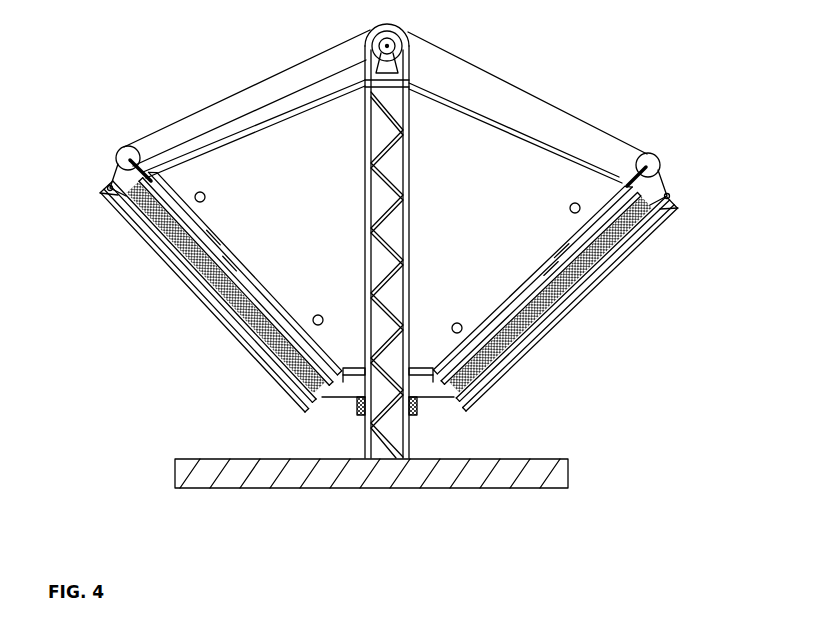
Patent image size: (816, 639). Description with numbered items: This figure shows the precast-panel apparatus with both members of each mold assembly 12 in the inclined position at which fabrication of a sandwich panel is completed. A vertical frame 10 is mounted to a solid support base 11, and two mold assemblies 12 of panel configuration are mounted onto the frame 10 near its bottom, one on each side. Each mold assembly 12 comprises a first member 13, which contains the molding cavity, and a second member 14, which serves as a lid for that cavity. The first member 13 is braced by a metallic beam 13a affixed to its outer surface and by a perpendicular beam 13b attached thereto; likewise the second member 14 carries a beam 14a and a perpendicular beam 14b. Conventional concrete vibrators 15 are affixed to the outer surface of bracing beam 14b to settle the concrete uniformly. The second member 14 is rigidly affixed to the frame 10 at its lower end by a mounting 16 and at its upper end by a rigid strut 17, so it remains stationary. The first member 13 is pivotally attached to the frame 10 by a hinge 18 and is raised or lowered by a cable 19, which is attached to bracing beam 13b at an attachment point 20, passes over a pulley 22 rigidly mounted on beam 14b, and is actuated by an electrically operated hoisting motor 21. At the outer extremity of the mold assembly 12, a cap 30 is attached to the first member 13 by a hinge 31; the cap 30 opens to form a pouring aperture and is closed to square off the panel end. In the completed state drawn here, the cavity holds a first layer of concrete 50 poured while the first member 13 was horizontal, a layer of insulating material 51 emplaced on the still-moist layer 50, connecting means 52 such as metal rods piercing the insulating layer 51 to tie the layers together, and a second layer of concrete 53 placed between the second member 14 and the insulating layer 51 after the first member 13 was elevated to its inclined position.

The vertical frame 10 is at (409, 199).
The solid support base 11 is at (195, 458).
The mold assembly 12 is at (176, 279).
The first member 13 is at (239, 309).
The bracing beam 13a is at (251, 326).
The bracing beam 13b is at (264, 353).
The second member 14 is at (239, 271).
The bracing beam 14a is at (266, 289).
The bracing beam 14b is at (284, 301).
The concrete vibrator 15 is at (206, 194).
The mounting 16 is at (350, 367).
The rigid strut 17 is at (243, 134).
The hinge 18 is at (350, 403).
The cable 19 is at (169, 127).
The cable attachment point 20 is at (109, 188).
The hoisting motor 21 is at (313, 82).
The pulley 22 is at (119, 150).
The cap 30 is at (128, 182).
The hinge 31 is at (117, 195).
The first layer of concrete 50 is at (215, 206).
The layer of insulating material 51 is at (200, 219).
The connecting means 52 is at (200, 238).
The second layer of concrete 53 is at (164, 208).